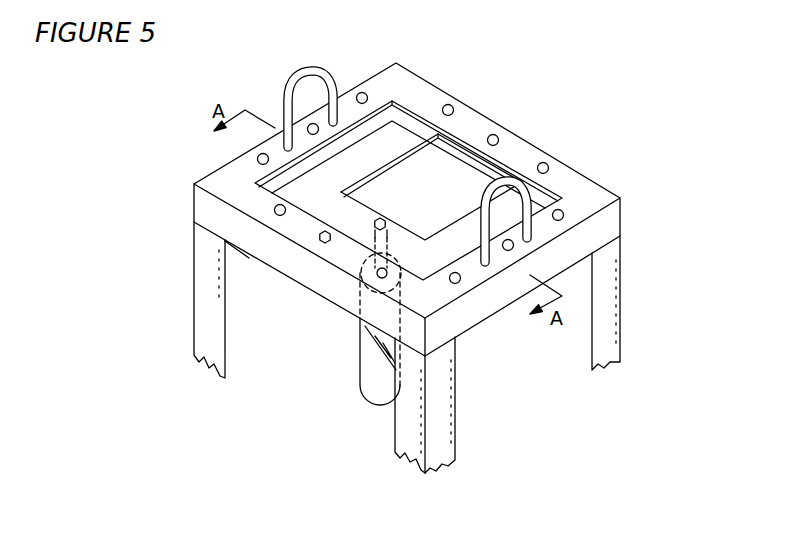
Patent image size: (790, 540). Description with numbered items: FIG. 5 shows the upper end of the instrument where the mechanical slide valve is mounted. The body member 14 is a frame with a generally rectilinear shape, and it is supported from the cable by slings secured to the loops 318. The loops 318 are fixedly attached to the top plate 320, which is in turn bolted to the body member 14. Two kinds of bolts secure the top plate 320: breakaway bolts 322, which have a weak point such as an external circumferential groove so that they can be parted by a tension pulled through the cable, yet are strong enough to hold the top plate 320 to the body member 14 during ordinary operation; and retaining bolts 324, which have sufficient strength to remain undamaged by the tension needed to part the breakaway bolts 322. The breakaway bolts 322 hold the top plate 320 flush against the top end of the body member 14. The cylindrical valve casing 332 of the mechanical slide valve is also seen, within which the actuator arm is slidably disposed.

The body member 14 is at (608, 353).
The loops 318 is at (296, 83).
The top plate 320 is at (585, 187).
The breakaway bolts 322 is at (363, 92).
The retaining bolts 324 is at (321, 241).
The valve casing 332 is at (366, 368).